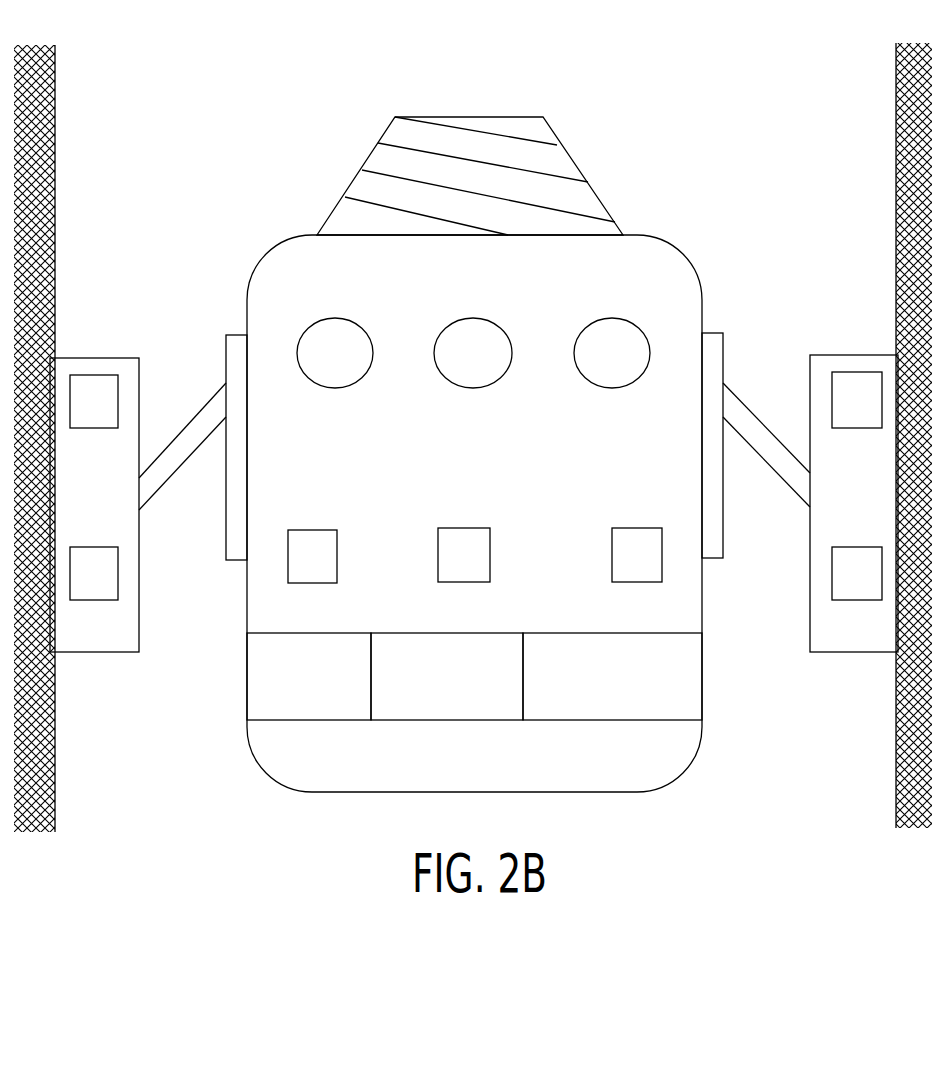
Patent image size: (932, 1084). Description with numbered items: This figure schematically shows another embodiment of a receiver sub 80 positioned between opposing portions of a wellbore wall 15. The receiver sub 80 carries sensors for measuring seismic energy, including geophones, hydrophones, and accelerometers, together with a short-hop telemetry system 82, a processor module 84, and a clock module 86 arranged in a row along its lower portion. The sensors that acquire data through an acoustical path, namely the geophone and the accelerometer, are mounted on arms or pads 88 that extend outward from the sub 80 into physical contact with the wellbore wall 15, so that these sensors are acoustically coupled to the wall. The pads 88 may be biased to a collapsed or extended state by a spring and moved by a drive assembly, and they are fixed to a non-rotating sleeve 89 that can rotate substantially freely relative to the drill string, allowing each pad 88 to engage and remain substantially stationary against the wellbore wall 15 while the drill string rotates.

The wellbore wall 15 is at (473, 437).
The receiver sub 80 is at (419, 464).
The short-hop telemetry system 82 is at (612, 700).
The processor module 84 is at (447, 700).
The clock module 86 is at (309, 700).
The arms or pads 88 is at (474, 466).
The non-rotating sleeve 89 is at (474, 408).